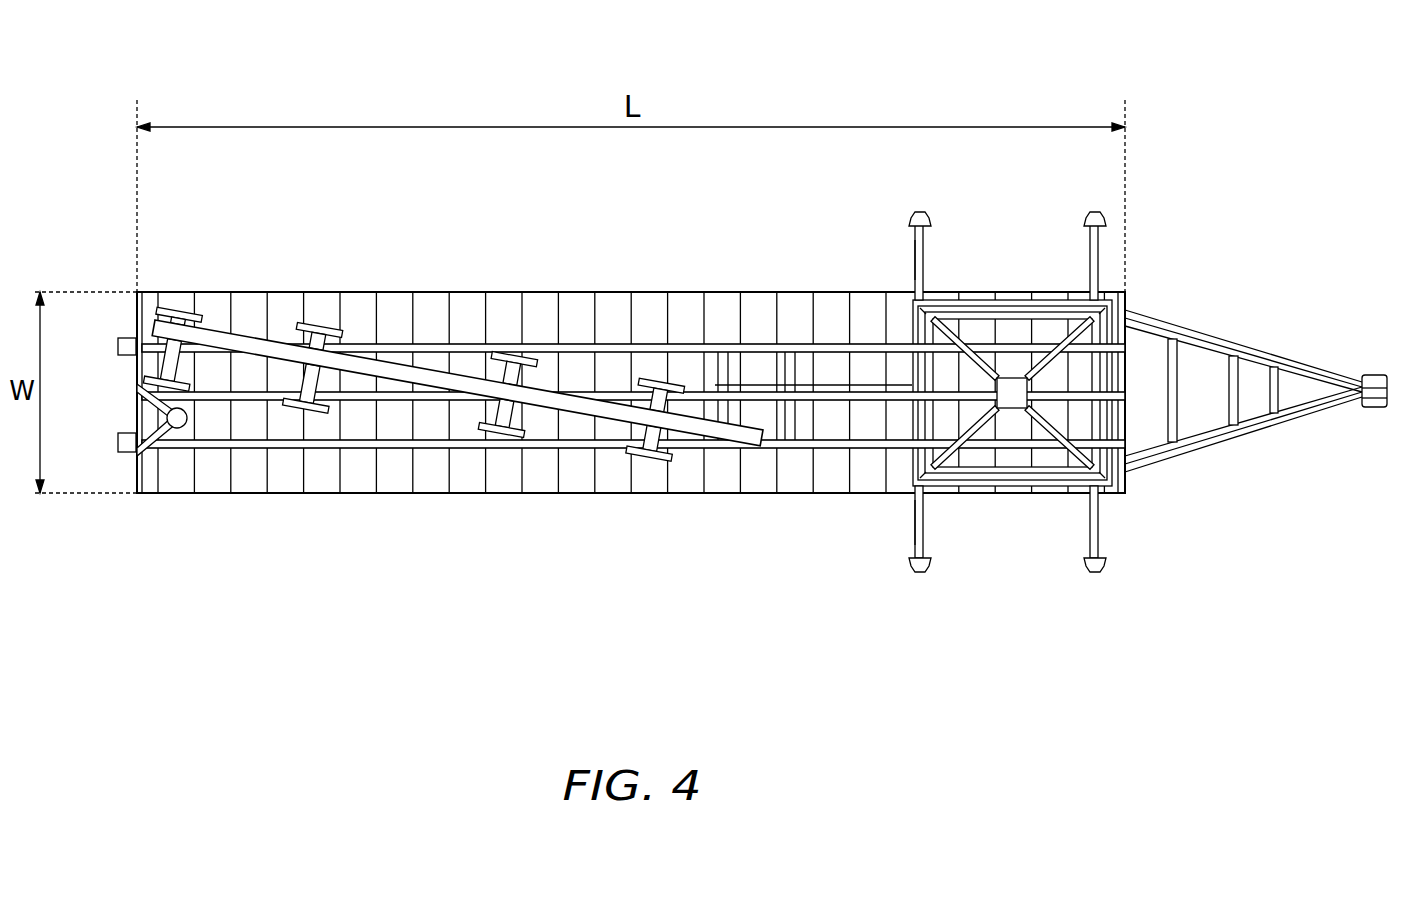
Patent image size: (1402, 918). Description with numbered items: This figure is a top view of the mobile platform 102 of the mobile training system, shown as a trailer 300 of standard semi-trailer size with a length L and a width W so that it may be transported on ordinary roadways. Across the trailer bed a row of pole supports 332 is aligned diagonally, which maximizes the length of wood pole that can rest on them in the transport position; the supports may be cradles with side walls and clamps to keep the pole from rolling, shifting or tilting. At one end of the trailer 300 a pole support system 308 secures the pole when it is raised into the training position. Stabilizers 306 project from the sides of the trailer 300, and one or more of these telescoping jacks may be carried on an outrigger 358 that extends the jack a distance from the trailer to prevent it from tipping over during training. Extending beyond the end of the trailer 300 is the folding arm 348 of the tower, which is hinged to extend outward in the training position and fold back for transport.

The mobile platform 102 is at (1262, 210).
The trailer 300 is at (705, 505).
The stabilizer 306 is at (118, 345).
The pole support system 308 is at (178, 430).
The pole support 332 is at (184, 305).
The folding arm 348 is at (1247, 328).
The outrigger 358 is at (913, 258).